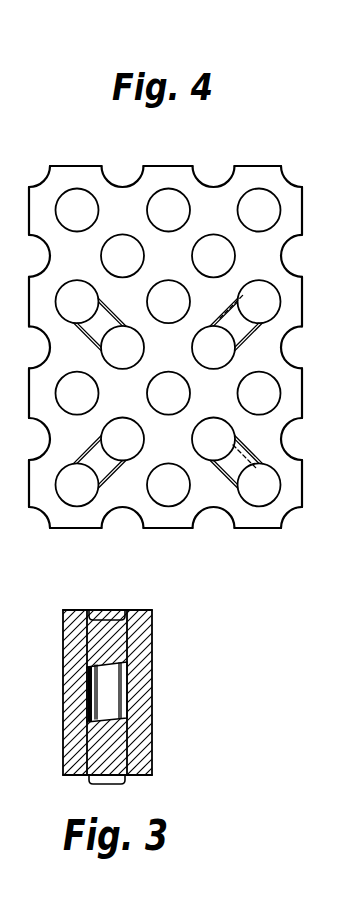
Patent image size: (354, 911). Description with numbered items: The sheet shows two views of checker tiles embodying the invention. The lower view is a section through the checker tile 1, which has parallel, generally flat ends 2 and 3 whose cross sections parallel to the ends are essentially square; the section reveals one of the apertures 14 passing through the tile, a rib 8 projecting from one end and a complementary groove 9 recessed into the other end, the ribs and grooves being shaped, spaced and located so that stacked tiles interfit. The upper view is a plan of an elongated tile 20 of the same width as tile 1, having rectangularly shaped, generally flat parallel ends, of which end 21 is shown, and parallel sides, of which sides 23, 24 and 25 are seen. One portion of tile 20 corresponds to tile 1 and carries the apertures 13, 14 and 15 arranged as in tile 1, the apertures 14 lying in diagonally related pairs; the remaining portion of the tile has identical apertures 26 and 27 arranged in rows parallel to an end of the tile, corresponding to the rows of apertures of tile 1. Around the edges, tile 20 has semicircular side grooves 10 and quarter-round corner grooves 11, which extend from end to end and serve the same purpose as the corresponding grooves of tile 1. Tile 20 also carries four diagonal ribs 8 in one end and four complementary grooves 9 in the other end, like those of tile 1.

In FIG. 3, the checker tile 1 is at (63, 695).
In FIG. 3, the end 2 is at (77, 611).
In FIG. 4, the end 3 is at (350, 405).
In FIG. 3, the end 3 is at (140, 776).
In FIG. 4, the ribs 8 is at (222, 318).
In FIG. 3, the ribs 8 is at (95, 784).
In FIG. 4, the grooves 9 is at (234, 445).
In FIG. 3, the grooves 9 is at (100, 612).
In FIG. 4, the side grooves 10 is at (113, 186).
In FIG. 4, the corner grooves 11 is at (43, 182).
In FIG. 4, the aperture 13 is at (182, 392).
In FIG. 4, the apertures 14 is at (104, 350).
In FIG. 3, the apertures 14 is at (116, 686).
In FIG. 4, the aperture 15 is at (147, 300).
In FIG. 4, the tile 20 is at (304, 483).
In FIG. 4, the end 21 is at (243, 183).
In FIG. 4, the side 23 is at (163, 165).
In FIG. 4, the side 24 is at (303, 312).
In FIG. 4, the side 25 is at (172, 528).
In FIG. 4, the apertures 26 is at (101, 253).
In FIG. 4, the apertures 27 is at (147, 204).